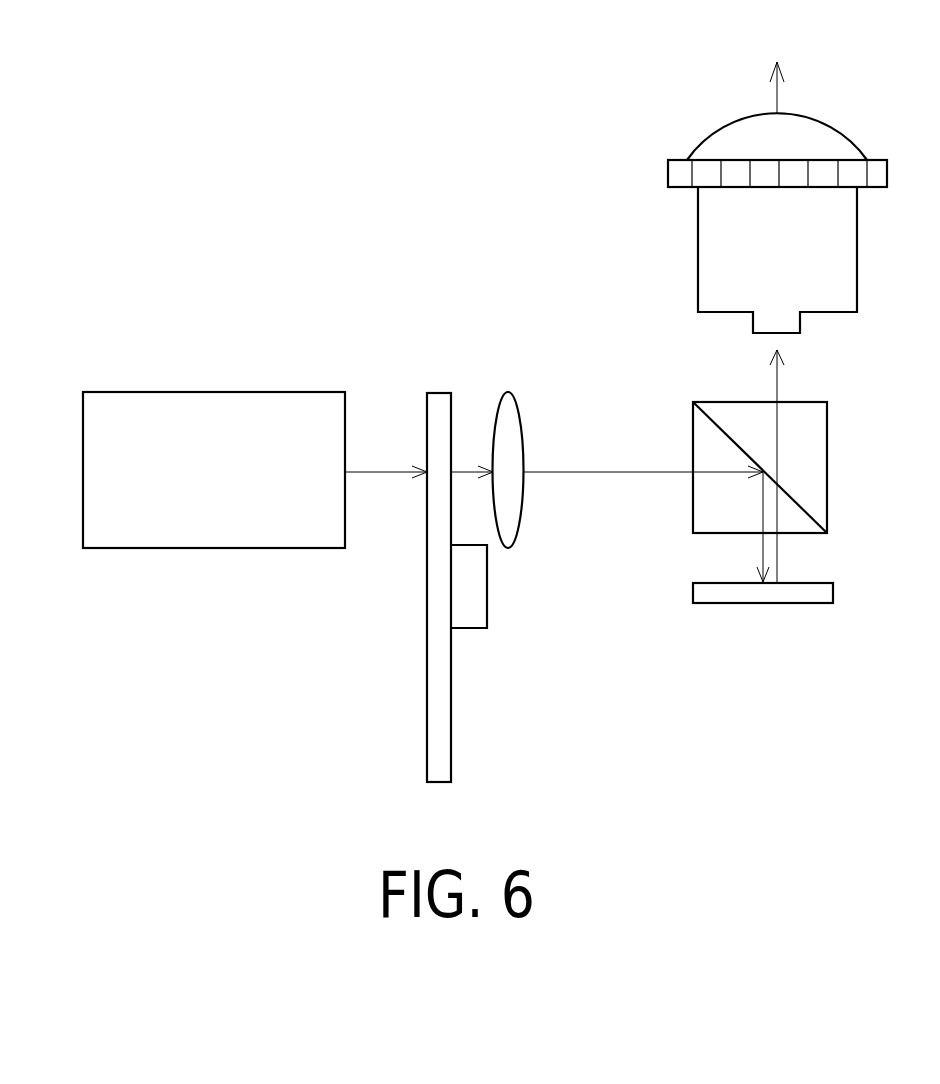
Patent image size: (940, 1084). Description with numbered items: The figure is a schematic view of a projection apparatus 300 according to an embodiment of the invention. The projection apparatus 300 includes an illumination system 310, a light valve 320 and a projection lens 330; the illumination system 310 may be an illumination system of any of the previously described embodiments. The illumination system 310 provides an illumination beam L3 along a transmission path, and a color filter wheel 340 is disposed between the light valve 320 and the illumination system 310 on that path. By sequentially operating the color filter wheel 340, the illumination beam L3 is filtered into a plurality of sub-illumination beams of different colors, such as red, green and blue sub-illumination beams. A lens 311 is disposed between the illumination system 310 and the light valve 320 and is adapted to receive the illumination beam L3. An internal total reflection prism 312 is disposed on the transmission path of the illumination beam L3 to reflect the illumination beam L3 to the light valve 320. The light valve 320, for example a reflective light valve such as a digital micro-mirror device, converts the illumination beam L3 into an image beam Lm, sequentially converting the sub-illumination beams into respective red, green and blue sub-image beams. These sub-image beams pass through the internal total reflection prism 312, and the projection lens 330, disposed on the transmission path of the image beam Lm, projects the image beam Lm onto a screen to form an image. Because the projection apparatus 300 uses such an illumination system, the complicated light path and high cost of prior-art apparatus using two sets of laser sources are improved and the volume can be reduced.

The projection apparatus 300 is at (843, 769).
The illumination system 310 is at (213, 422).
The lens 311 is at (505, 413).
The internal total reflection prism 312 is at (817, 457).
The light valve 320 is at (820, 590).
The projection lens 330 is at (845, 252).
The color filter wheel 340 is at (438, 715).
The illumination beam L3 is at (392, 470).
The image beam Lm is at (777, 382).